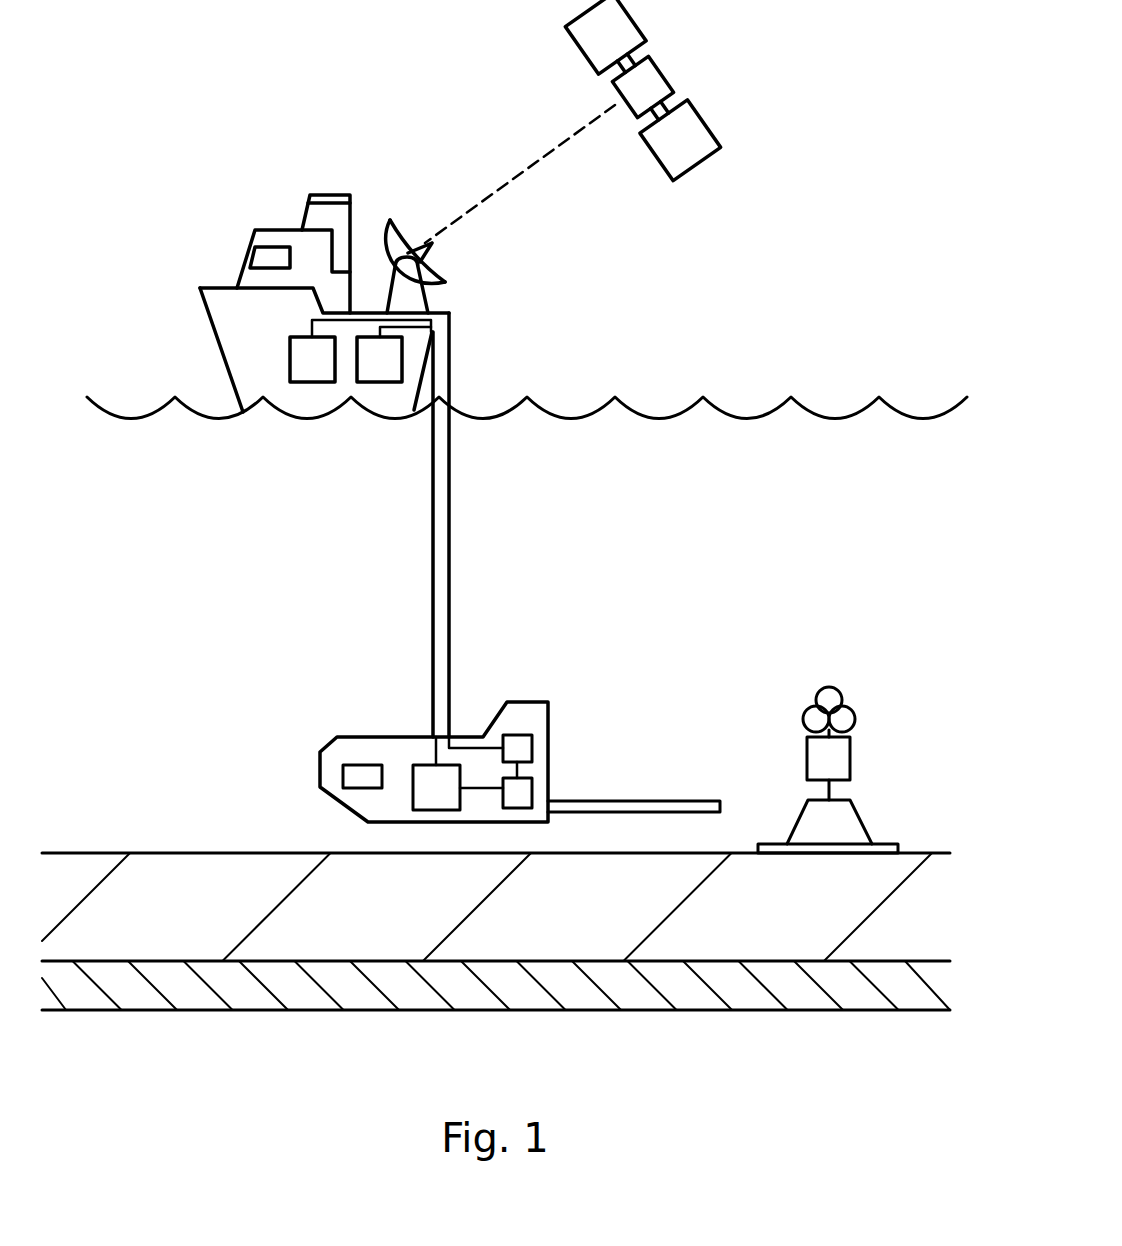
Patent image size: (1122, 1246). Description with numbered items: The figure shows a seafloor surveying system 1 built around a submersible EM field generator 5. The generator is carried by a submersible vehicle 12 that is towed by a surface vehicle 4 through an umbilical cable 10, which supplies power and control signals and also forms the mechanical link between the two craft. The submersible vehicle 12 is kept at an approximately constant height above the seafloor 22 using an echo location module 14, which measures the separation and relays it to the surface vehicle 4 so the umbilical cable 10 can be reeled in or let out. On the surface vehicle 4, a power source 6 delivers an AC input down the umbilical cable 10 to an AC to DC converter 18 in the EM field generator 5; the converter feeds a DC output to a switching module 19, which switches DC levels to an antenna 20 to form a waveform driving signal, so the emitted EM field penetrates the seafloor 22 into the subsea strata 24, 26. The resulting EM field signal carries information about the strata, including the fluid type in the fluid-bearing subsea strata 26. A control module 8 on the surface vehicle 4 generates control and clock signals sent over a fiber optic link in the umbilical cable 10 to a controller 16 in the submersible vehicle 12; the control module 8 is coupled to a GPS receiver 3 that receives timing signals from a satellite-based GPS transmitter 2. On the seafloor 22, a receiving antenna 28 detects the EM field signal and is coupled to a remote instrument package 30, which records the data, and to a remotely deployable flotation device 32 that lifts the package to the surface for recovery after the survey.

The seafloor surveying system 1 is at (198, 181).
The satellite-based GPS transmitter 2 is at (652, 101).
The GPS receiver 3 is at (450, 265).
The surface vehicle 4 is at (207, 287).
The submersible EM field generator 5 is at (595, 727).
The power source 6 is at (302, 377).
The control module 8 is at (369, 377).
The umbilical cable 10 is at (450, 567).
The submersible vehicle 12 is at (345, 737).
The echo location module 14 is at (343, 777).
The controller 16 is at (427, 765).
The AC to DC converter 18 is at (520, 735).
The switching module 19 is at (535, 808).
The antenna 20 is at (647, 801).
The seafloor 22 is at (180, 853).
The subsea strata 24 is at (503, 931).
The fluid-bearing subsea strata 26 is at (497, 1002).
The receiving antenna 28 is at (880, 844).
The remote instrument package 30 is at (850, 763).
The remotely deployable flotation device 32 is at (840, 702).